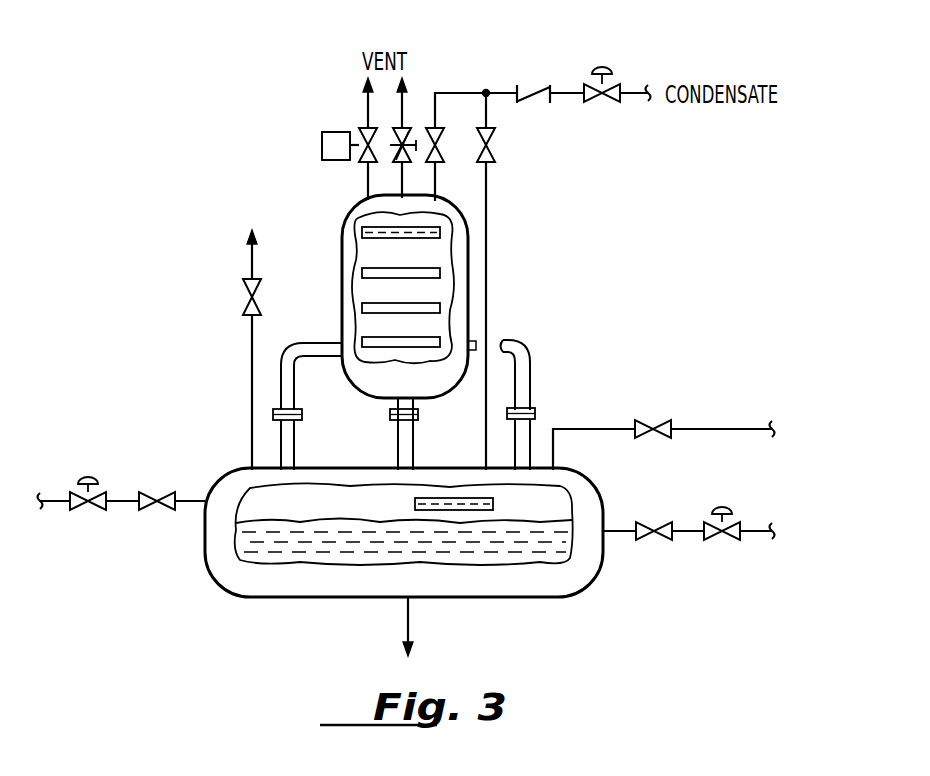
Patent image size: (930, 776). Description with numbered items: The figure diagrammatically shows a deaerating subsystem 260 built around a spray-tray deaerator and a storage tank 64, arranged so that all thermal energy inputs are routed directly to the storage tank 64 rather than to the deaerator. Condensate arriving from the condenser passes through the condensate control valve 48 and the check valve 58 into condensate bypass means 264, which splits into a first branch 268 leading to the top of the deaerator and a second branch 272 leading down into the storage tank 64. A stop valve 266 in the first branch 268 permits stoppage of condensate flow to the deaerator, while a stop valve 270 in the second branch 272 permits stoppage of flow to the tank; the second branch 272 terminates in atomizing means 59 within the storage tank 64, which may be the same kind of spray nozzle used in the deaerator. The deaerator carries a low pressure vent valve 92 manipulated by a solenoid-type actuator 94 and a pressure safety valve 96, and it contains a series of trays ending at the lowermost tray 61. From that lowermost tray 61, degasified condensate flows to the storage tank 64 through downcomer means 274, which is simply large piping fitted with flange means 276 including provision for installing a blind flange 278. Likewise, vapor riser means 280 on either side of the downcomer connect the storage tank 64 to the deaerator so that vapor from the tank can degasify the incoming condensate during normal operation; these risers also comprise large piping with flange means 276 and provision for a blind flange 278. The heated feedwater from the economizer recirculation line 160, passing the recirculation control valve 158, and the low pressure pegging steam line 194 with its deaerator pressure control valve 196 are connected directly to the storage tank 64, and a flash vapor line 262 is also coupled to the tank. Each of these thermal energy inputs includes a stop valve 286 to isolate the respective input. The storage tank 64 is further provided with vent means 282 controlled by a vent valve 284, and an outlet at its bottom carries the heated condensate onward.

The condensate control valve 48 is at (606, 70).
The check valve 58 is at (533, 84).
The atomizing means 59 is at (362, 231).
The lowermost tray 61 is at (365, 341).
The storage tank 64 is at (232, 563).
The low pressure vent valve 92 is at (365, 153).
The actuator 94 is at (322, 145).
The pressure safety valve 96 is at (404, 153).
The recirculation control valve 158 is at (728, 508).
The economizer recirculation line 160 is at (757, 535).
The steam line 194 is at (57, 505).
The deaerator pressure control valve 196 is at (88, 478).
The deaerating subsystem 260 is at (583, 243).
The flash vapor line 262 is at (725, 428).
The condensate bypass means 264 is at (466, 89).
The stop valve 266 is at (443, 152).
The first branch 268 is at (471, 92).
The stop valve 270 is at (493, 153).
The second branch 272 is at (488, 110).
The downcomer means 274 is at (396, 448).
The flange means 276 is at (390, 412).
The blind flange 278 is at (273, 413).
The vapor riser means 280 is at (295, 353).
The vent means 282 is at (252, 343).
The vent valve 284 is at (243, 287).
The stop valve 286 is at (147, 492).